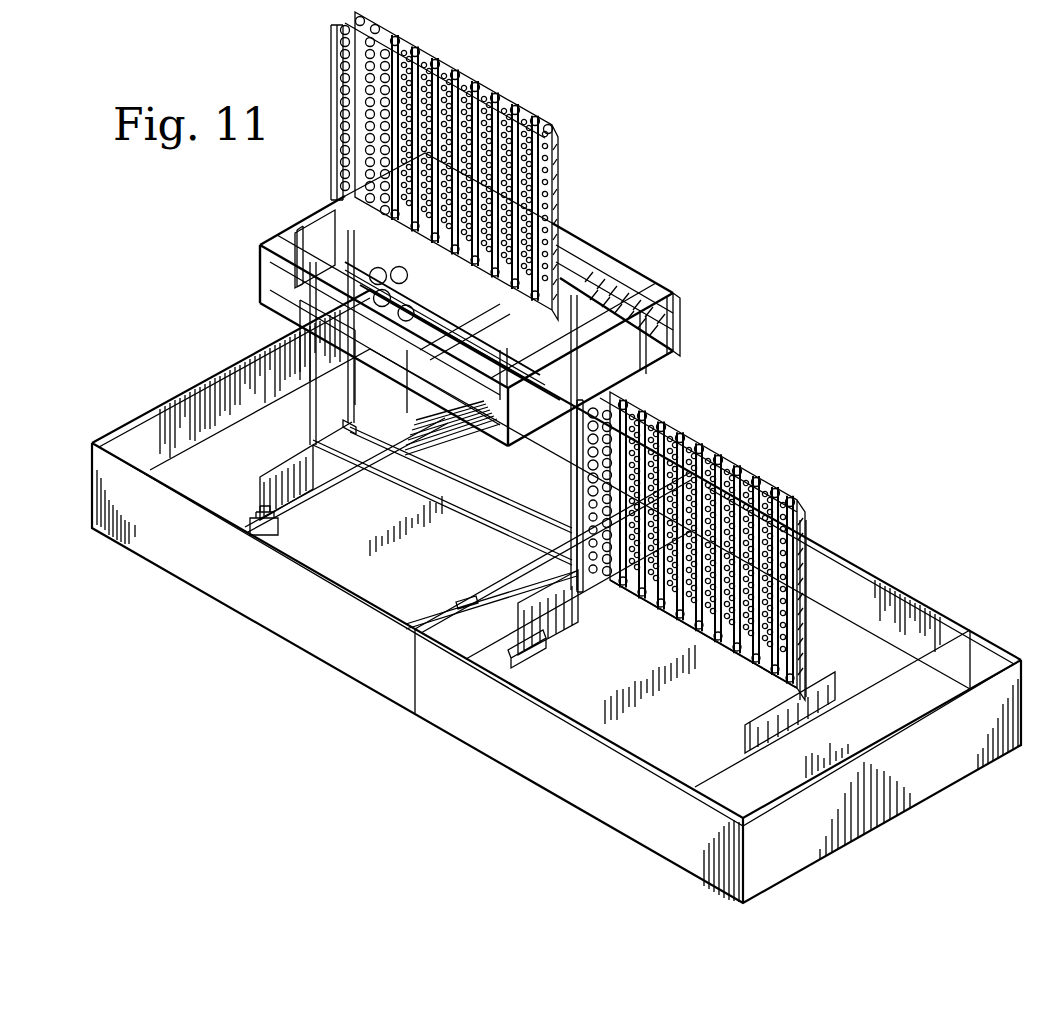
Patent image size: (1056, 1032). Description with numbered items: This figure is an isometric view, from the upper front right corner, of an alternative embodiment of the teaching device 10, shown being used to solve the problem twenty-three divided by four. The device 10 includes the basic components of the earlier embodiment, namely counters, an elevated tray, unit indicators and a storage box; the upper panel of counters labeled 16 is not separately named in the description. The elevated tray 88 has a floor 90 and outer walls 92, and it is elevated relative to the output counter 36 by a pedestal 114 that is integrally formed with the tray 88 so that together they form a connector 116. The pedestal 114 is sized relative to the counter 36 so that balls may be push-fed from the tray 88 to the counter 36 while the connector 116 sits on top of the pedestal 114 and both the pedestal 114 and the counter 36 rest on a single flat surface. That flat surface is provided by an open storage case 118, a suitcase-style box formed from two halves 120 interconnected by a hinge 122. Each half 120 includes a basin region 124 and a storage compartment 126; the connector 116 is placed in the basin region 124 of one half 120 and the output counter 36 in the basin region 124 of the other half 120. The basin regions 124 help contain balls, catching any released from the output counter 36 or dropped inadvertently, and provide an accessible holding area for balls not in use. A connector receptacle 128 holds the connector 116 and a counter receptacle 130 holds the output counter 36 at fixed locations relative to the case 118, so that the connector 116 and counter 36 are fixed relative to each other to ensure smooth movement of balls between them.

The device 10 is at (195, 188).
The first tube array panel 16 is at (577, 156).
The output counter 36 is at (738, 448).
The elevated tray 88 is at (250, 273).
The floor 90 is at (430, 333).
The outer walls 92 is at (622, 260).
The pedestal 114 is at (500, 507).
The connector 116 is at (692, 323).
The open storage case 118 is at (406, 723).
The halves 120 is at (278, 612).
The hinge 122 is at (458, 599).
The basin region 124 is at (537, 615).
The storage compartment 126 is at (157, 441).
The connector receptacle 128 is at (278, 530).
The counter receptacle 130 is at (546, 658).